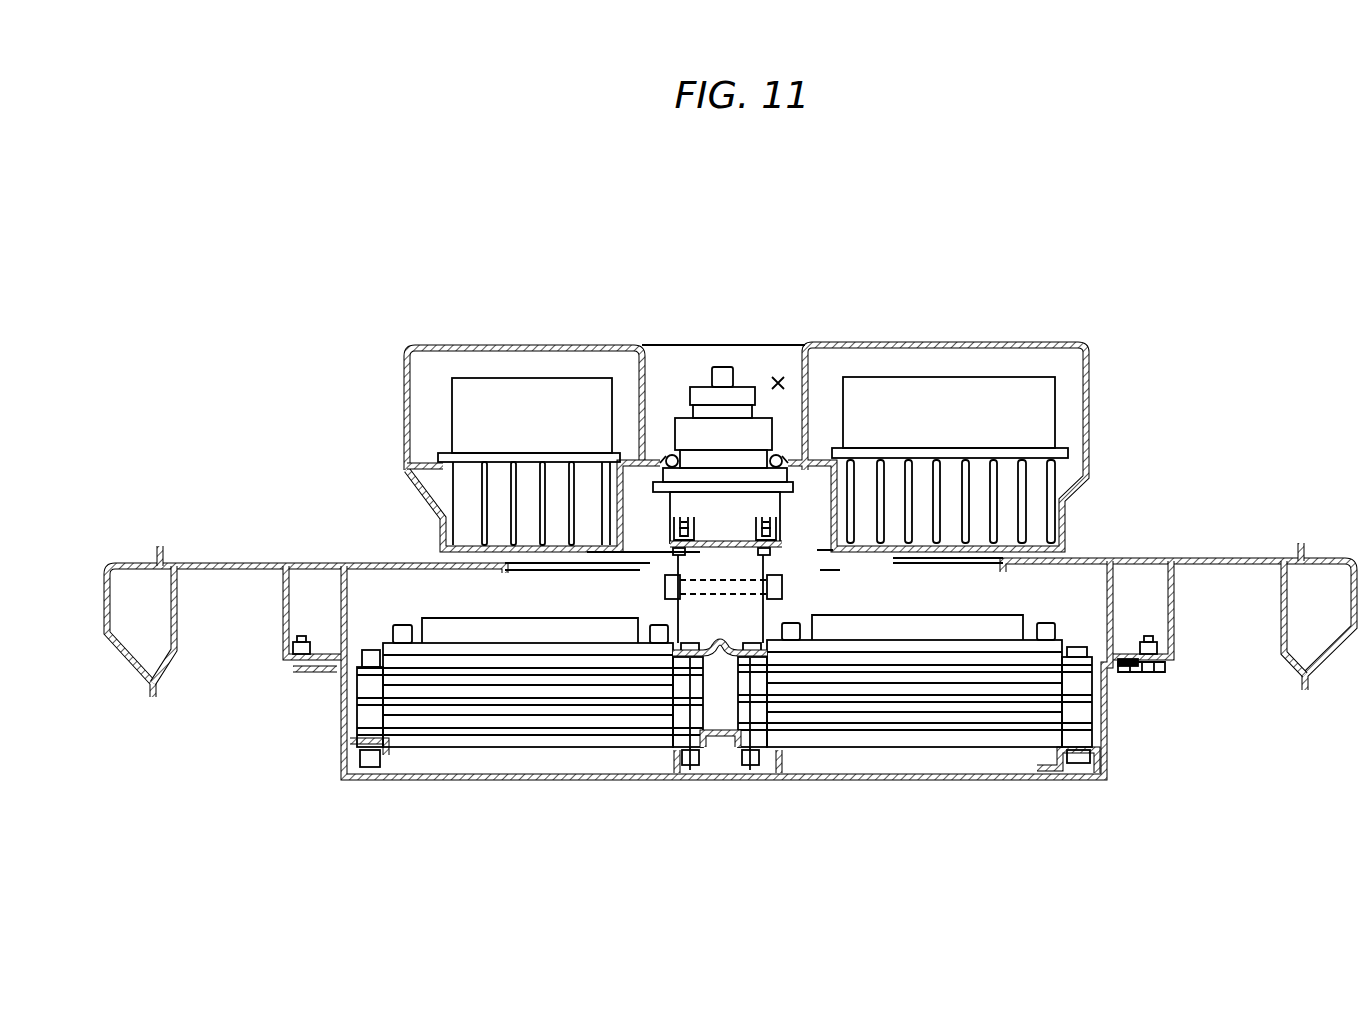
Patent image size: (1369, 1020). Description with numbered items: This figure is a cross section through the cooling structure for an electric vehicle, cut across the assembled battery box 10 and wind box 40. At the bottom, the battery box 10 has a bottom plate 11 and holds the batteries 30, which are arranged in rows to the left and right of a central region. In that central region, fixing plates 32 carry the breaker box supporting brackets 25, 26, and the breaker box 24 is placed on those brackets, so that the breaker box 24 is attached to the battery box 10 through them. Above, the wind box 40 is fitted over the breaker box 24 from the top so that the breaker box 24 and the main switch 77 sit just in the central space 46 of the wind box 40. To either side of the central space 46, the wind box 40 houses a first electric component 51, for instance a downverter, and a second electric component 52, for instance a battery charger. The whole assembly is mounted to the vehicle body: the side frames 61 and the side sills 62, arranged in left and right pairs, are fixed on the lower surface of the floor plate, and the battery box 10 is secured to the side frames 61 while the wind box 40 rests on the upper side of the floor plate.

The battery box 10 is at (1118, 760).
The bottom plate 11 is at (877, 780).
The breaker box 24 is at (688, 405).
The breaker box supporting bracket 25 is at (674, 616).
The breaker box supporting bracket 26 is at (672, 567).
The battery 30 is at (520, 722).
The fixing plate 32 is at (688, 718).
The wind box 40 is at (877, 344).
The central space 46 is at (778, 378).
The first electric component 51 is at (518, 378).
The second electric component 52 is at (970, 377).
The side frame 61 is at (282, 634).
The side sill 62 is at (120, 657).
The main switch 77 is at (718, 366).